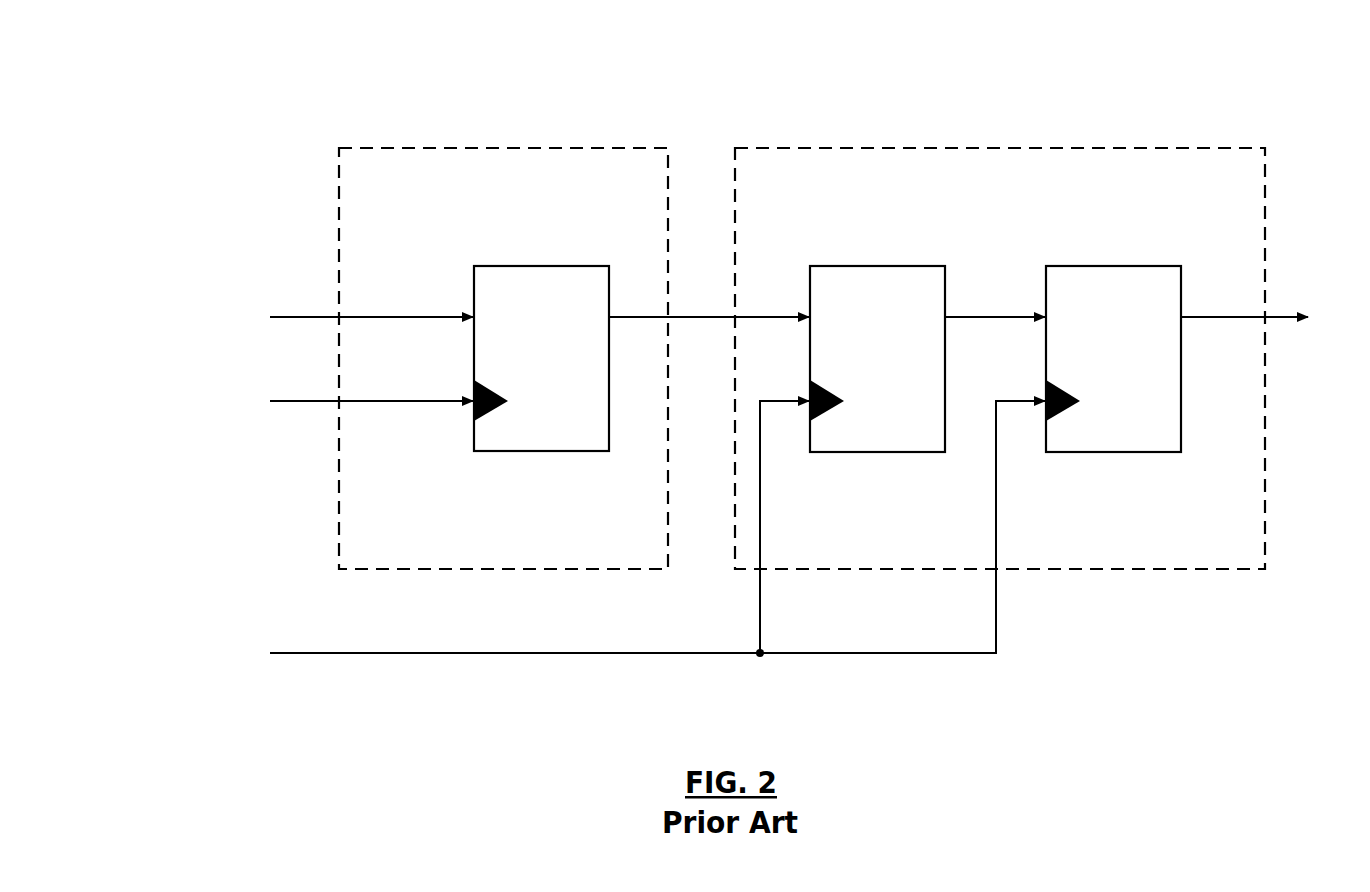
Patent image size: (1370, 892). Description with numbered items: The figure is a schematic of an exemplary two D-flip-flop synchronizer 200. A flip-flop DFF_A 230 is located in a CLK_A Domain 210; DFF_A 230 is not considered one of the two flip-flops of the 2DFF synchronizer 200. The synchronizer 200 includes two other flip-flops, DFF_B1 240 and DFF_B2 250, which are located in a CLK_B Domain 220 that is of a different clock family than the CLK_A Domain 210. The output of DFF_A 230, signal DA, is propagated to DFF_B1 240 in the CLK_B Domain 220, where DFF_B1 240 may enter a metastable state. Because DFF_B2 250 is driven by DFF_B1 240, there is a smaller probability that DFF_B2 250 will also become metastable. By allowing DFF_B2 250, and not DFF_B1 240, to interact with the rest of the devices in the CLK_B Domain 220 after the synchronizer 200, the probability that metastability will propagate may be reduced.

The 2DFF synchronizer 200 is at (268, 75).
The CLK_A Domain 210 is at (508, 148).
The CLK_B Domain 220 is at (1012, 148).
The flip-flop DFF_A 230 is at (541, 266).
The flip-flop DFF_B1 240 is at (876, 266).
The flip-flop DFF_B2 250 is at (1114, 266).